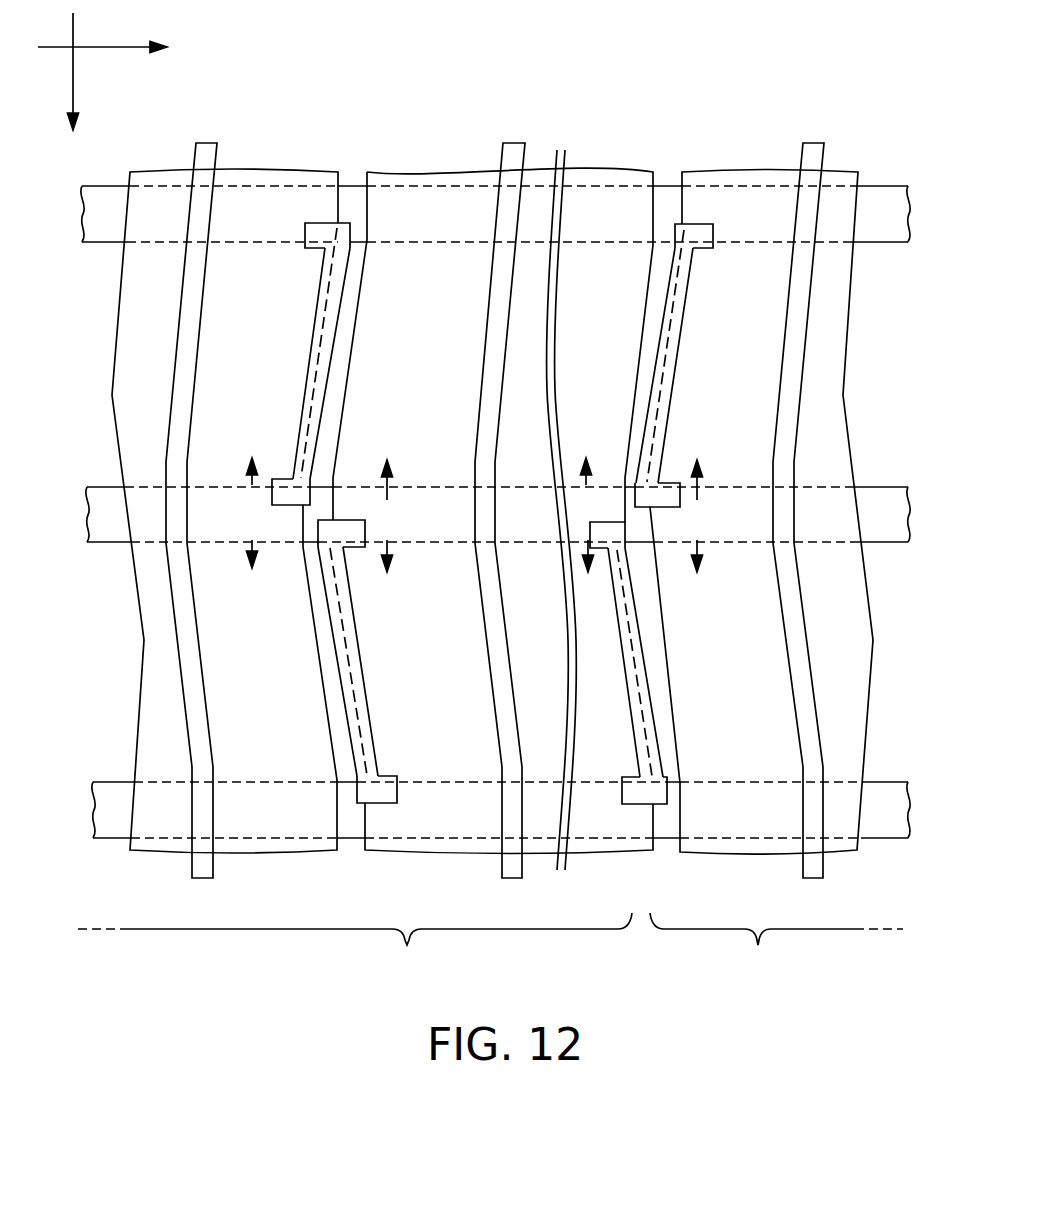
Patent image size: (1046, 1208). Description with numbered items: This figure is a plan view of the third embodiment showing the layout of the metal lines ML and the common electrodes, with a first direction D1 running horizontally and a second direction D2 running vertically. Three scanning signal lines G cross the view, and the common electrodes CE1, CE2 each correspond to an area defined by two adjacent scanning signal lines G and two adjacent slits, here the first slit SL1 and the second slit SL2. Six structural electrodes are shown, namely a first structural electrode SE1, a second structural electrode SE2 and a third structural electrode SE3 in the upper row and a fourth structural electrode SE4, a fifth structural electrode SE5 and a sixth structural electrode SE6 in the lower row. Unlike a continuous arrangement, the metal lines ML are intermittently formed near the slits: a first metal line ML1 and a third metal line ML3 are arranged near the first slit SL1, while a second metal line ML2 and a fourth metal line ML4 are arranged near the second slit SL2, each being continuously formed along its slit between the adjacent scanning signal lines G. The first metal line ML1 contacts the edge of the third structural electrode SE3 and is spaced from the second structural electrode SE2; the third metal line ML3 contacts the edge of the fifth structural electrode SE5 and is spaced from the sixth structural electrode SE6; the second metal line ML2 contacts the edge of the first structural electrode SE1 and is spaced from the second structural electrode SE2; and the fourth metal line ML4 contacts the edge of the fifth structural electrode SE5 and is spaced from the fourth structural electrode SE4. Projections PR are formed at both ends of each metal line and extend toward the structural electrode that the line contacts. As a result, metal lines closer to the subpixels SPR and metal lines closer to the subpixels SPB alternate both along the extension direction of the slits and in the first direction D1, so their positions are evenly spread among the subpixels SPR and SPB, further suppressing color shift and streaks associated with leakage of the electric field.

The first direction D1 is at (122, 50).
The second direction D2 is at (72, 89).
The scanning signal line G is at (897, 212).
The metal line ML is at (196, 148).
The first metal line ML1 is at (678, 318).
The second metal line ML2 is at (338, 293).
The third metal line ML3 is at (653, 722).
The fourth metal line ML4 is at (368, 722).
The first structural electrode SE1 is at (212, 361).
The second structural electrode SE2 is at (380, 350).
The third structural electrode SE3 is at (774, 352).
The fourth structural electrode SE4 is at (212, 647).
The fifth structural electrode SE5 is at (362, 632).
The sixth structural electrode SE6 is at (778, 657).
The projection PR is at (305, 236).
The first slit SL1 is at (656, 166).
The second slit SL2 is at (358, 165).
The subpixel SPB is at (252, 540).
The subpixel SPR is at (398, 507).
The first common electrode CE1 is at (355, 946).
The second common electrode CE2 is at (776, 946).